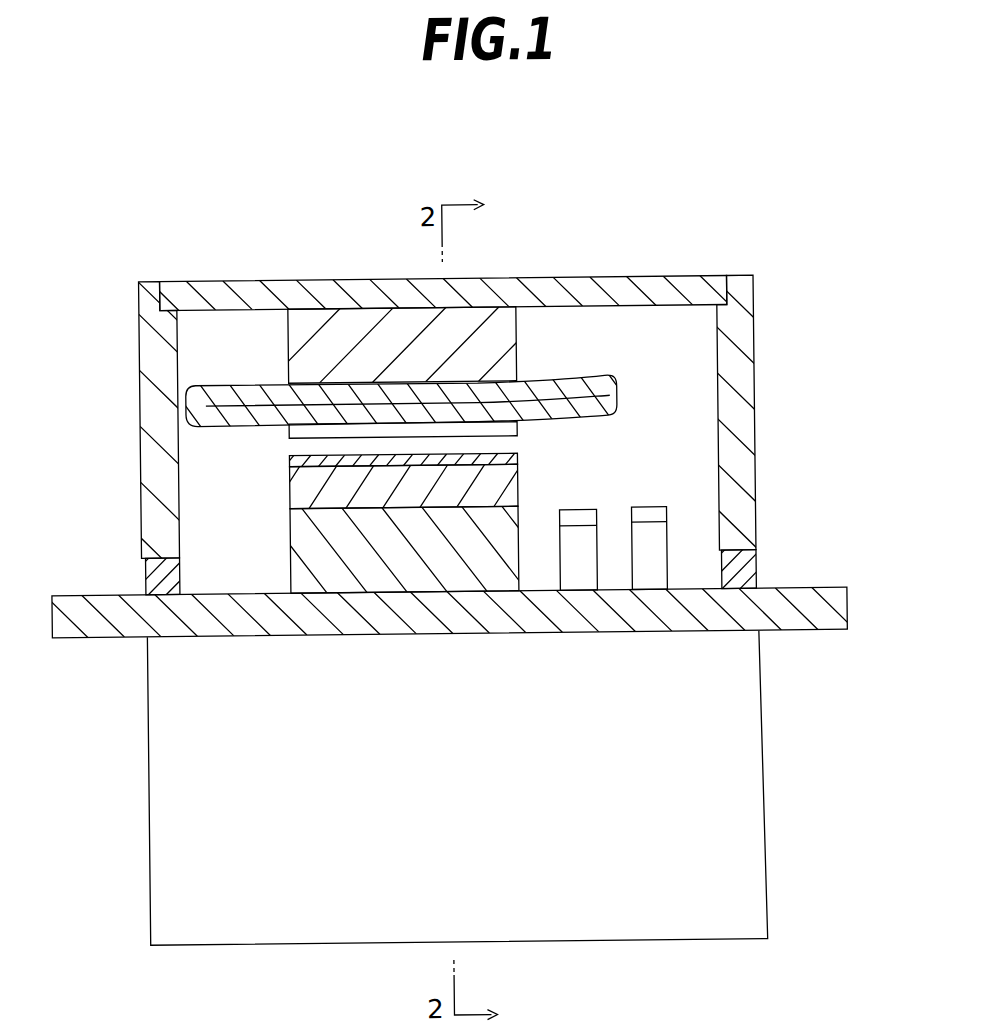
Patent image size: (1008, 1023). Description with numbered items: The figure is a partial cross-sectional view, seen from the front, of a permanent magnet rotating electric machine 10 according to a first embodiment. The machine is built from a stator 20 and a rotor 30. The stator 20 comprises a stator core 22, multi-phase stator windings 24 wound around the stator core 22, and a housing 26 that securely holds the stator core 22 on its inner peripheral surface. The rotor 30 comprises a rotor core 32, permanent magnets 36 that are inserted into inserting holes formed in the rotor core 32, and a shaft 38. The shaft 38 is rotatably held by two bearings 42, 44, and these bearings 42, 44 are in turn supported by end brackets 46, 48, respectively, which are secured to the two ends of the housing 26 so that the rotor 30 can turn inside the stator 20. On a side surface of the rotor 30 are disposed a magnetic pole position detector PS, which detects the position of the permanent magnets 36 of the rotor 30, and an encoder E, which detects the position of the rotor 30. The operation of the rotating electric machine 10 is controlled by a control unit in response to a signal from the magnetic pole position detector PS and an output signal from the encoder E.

The rotating electric machine 10 is at (765, 248).
The stator 20 is at (567, 354).
The stator core 22 is at (366, 327).
The multi-phase stator windings 24 is at (622, 392).
The housing 26 is at (548, 288).
The rotor 30 is at (205, 520).
The rotor core 32 is at (301, 562).
The permanent magnets 36 is at (520, 488).
The shaft 38 is at (848, 606).
The bearing 42 is at (147, 575).
The bearing 44 is at (757, 581).
The end bracket 46 is at (148, 399).
The end bracket 48 is at (756, 381).
The encoder E is at (574, 518).
The magnetic pole position detector PS is at (641, 514).